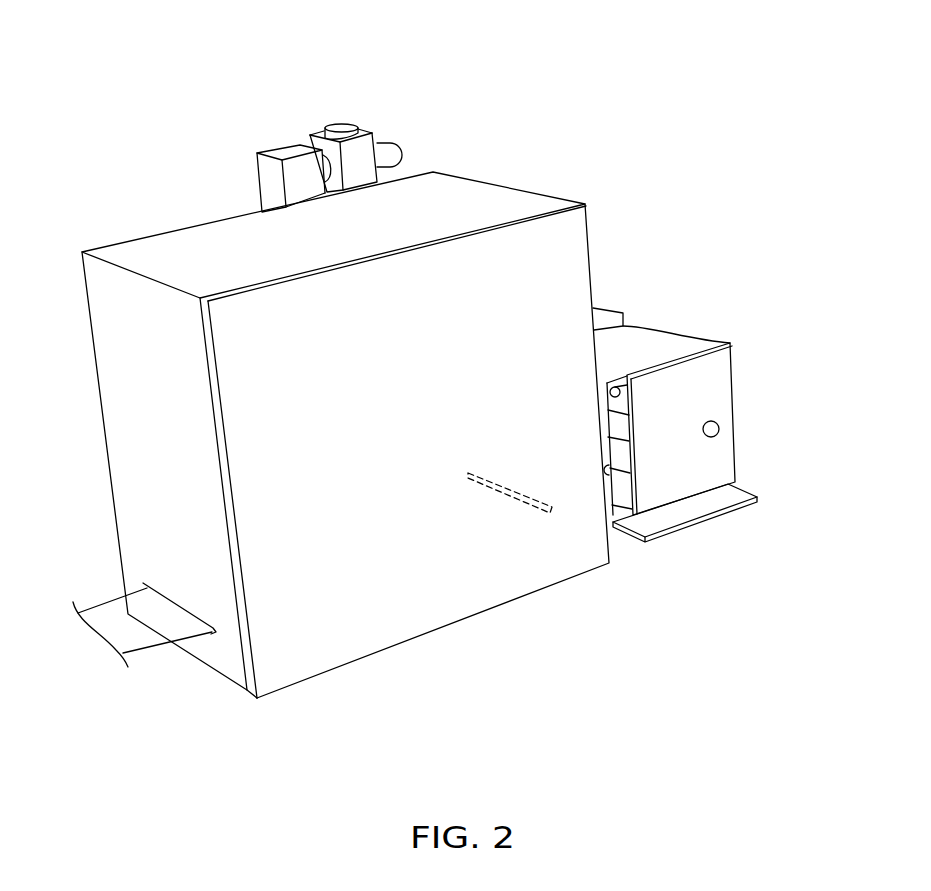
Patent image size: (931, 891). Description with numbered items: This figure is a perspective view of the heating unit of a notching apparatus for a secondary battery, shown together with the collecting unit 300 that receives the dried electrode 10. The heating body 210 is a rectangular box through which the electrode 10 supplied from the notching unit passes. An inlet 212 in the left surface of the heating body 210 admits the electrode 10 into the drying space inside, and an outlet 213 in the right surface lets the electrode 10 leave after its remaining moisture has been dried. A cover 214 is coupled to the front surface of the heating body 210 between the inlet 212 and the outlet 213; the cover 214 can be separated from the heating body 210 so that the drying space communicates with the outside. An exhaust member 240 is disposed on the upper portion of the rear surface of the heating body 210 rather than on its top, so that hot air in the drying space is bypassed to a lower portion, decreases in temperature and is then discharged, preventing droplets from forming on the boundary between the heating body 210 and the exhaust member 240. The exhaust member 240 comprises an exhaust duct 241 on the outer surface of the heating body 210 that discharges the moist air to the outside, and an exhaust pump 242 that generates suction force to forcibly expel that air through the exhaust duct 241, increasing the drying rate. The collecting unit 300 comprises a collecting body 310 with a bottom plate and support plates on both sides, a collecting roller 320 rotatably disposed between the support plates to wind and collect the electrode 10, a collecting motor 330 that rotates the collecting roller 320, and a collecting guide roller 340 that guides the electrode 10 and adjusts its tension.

The electrode 10 is at (153, 642).
The heating body 210 is at (520, 192).
The inlet 212 is at (201, 640).
The outlet 213 is at (545, 517).
The cover 214 is at (563, 203).
The exhaust member 240 is at (312, 111).
The exhaust duct 241 is at (282, 156).
The exhaust pump 242 is at (327, 145).
The collecting unit 300 is at (728, 393).
The collecting body 310 is at (727, 461).
The collecting roller 320 is at (752, 390).
The collecting motor 330 is at (623, 312).
The collecting guide roller 340 is at (614, 389).